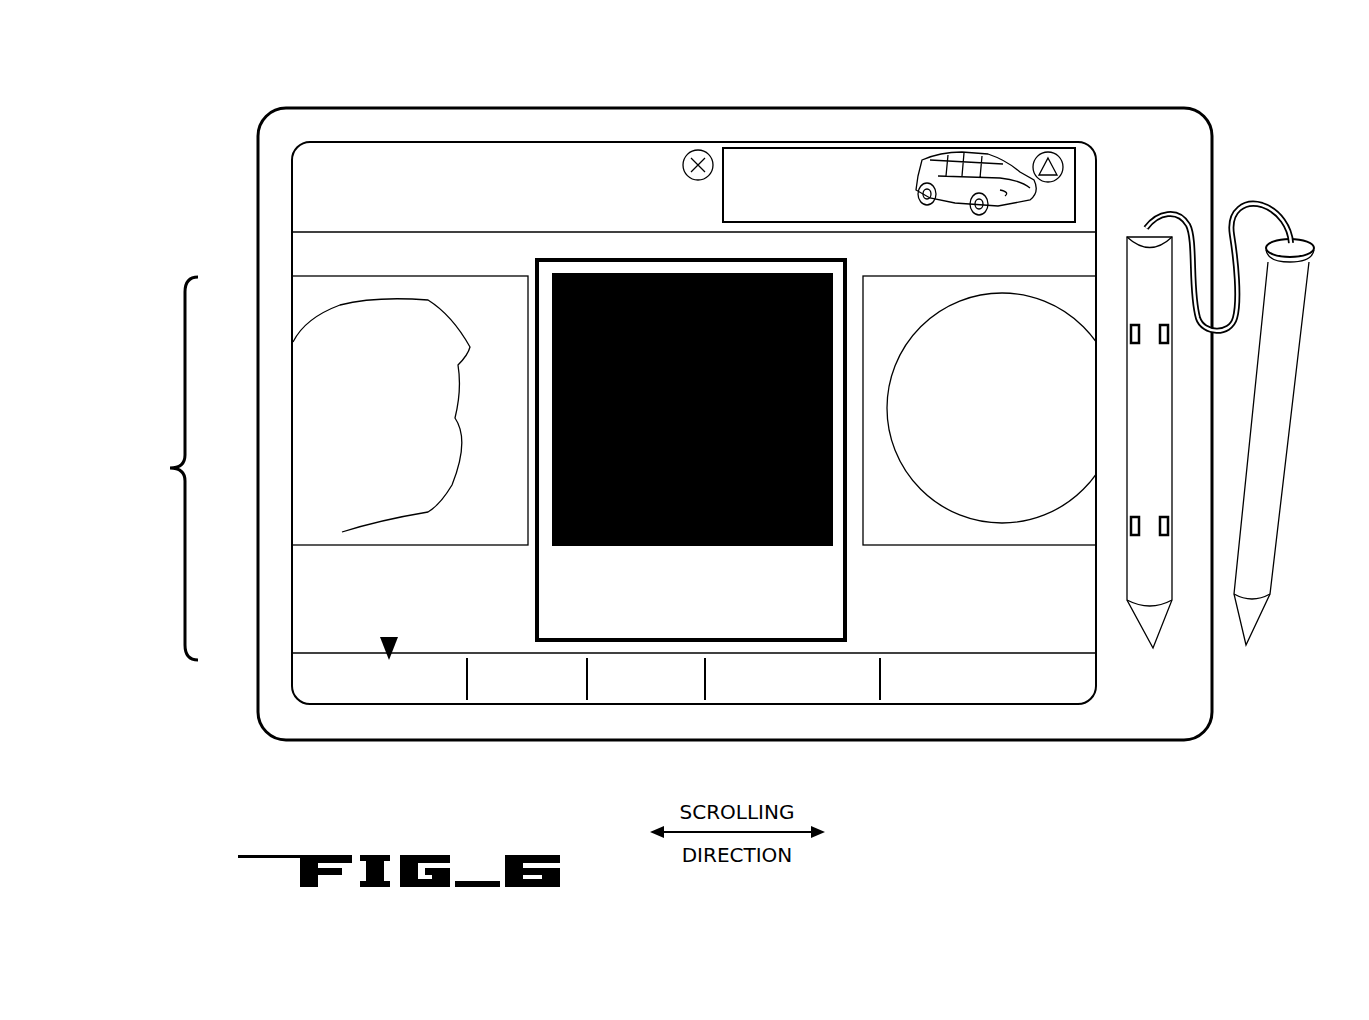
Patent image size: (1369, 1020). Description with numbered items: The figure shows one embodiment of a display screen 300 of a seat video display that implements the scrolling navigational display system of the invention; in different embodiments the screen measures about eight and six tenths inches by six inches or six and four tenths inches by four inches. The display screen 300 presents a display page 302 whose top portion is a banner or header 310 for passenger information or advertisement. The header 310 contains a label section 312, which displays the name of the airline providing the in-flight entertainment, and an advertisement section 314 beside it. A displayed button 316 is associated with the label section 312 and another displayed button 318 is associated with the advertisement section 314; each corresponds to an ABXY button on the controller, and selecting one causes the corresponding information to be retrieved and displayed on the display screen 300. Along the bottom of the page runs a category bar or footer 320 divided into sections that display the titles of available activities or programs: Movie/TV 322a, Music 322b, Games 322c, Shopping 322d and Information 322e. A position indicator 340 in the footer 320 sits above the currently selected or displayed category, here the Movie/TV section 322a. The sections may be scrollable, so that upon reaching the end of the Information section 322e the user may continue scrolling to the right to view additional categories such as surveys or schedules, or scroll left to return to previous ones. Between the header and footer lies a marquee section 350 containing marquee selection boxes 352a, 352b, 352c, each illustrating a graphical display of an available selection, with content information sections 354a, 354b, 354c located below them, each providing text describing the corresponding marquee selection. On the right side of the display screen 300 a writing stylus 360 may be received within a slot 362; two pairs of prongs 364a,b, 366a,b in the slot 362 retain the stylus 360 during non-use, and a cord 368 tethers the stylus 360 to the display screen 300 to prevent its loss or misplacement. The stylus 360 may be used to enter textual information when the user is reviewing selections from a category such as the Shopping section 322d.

The display screen 300 is at (1192, 127).
The display page 302 is at (890, 136).
The banner or header 310 is at (1100, 180).
The label section 312 is at (447, 158).
The advertisement section 314 is at (842, 158).
The displayed button 316 is at (686, 152).
The displayed button 318 is at (1049, 150).
The category bar or footer 320 is at (746, 719).
The Movie/TV section 322a is at (390, 697).
The Music section 322b is at (525, 697).
The Games section 322c is at (640, 697).
The Shopping section 322d is at (785, 695).
The Information section 322e is at (975, 690).
The position indicator 340 is at (380, 645).
The marquee section 350 is at (160, 468).
The marquee selection box 352a is at (318, 419).
The marquee selection box 352b is at (838, 262).
The marquee selection box 352c is at (975, 278).
The content information section 354a is at (296, 580).
The content information section 354b is at (830, 617).
The content information section 354c is at (1073, 632).
The writing stylus 360 is at (1272, 440).
The slot 362 is at (1155, 440).
The pair of prongs 364a,b is at (1137, 346).
The pair of prongs 366a,b is at (1140, 540).
The cord 368 is at (1256, 206).